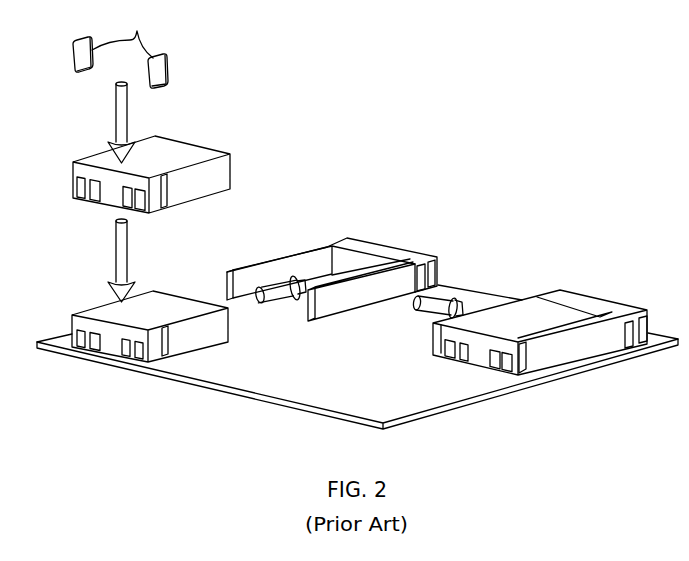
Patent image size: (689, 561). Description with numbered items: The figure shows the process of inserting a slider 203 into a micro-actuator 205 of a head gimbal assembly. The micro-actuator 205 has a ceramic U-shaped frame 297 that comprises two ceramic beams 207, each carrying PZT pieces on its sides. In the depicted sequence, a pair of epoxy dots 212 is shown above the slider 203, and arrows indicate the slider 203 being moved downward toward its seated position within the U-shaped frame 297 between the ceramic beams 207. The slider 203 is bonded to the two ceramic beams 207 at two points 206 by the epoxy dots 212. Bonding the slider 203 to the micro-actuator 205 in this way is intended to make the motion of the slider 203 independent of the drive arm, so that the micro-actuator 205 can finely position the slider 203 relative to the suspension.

The slider 203 is at (193, 148).
The micro-actuator 205 is at (393, 227).
The bonding points 206 is at (85, 155).
The ceramic beams 207 is at (287, 267).
The epoxy dots 212 is at (158, 77).
The ceramic U-shaped frame 297 is at (360, 247).